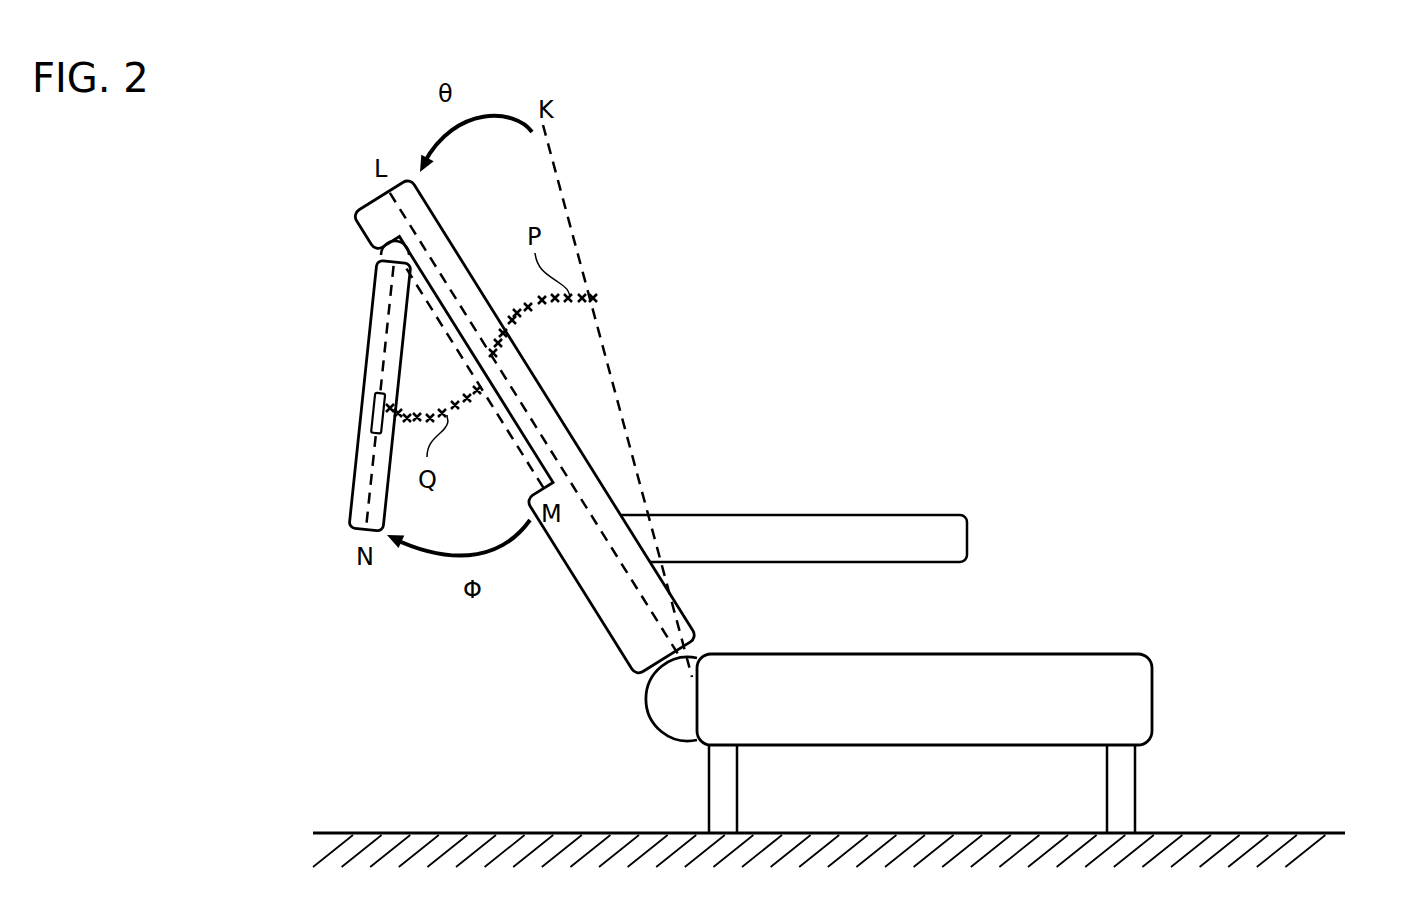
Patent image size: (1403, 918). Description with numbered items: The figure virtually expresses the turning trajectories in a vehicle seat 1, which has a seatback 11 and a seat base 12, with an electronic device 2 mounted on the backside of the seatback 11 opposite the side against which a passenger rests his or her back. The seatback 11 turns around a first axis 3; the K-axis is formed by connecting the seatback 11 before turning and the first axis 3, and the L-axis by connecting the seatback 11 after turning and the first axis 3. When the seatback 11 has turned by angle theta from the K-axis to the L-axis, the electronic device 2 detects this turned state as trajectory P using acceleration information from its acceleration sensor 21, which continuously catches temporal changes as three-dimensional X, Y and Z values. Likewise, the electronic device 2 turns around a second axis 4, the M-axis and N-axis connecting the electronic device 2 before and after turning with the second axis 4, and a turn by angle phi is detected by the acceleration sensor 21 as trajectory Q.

The seat 1 is at (668, 148).
The seatback 11 is at (430, 217).
The seat base 12 is at (1120, 673).
The electronic device 2 is at (324, 407).
The acceleration sensor 21 is at (314, 427).
The first axis 3 is at (685, 693).
The second axis 4 is at (380, 252).